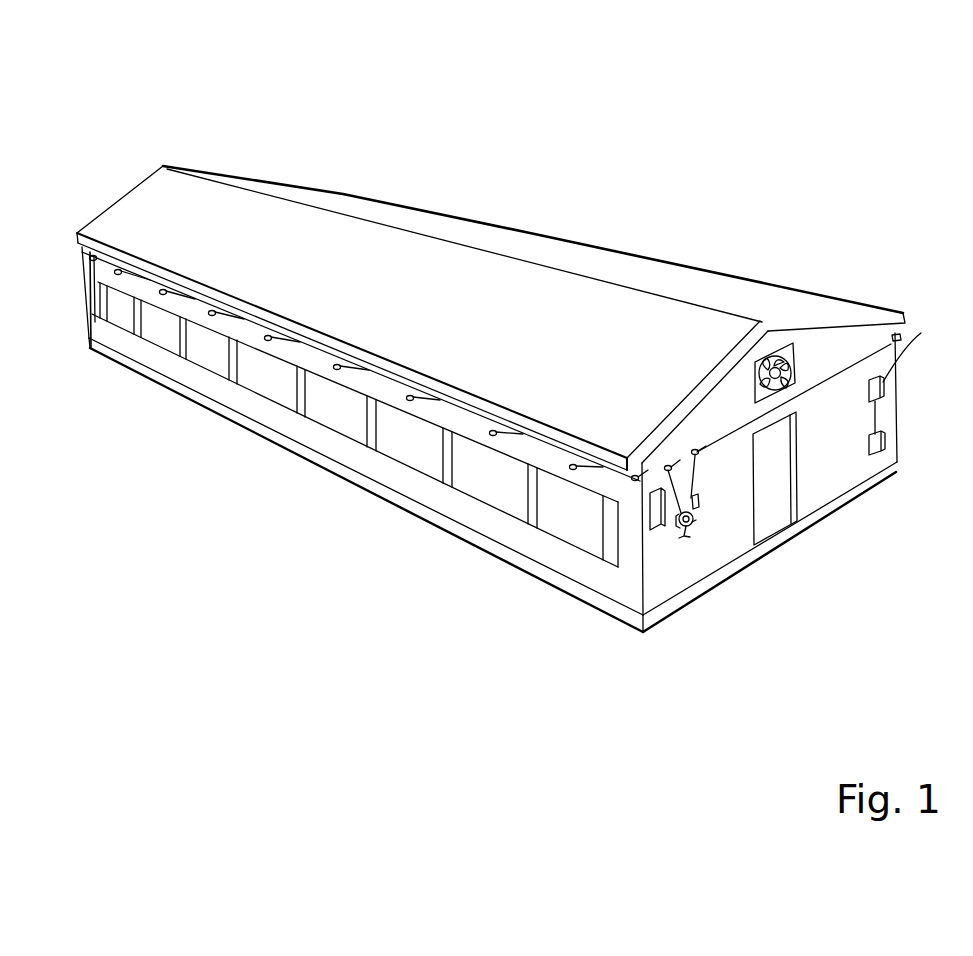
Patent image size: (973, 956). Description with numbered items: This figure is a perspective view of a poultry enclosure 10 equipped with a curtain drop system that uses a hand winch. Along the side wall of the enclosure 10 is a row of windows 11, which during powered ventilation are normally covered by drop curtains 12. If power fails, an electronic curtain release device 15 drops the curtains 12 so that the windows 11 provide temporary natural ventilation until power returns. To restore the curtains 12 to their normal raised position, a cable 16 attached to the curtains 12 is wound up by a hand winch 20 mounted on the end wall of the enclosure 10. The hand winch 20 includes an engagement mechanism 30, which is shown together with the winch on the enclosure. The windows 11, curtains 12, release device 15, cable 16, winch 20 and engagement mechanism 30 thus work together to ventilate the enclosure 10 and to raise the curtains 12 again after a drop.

The poultry enclosure 10 is at (692, 179).
The windows 11 is at (120, 333).
The drop curtains 12 is at (125, 300).
The electronic curtain release device 15 is at (697, 499).
The cable 16 is at (837, 372).
The hand winch 20 is at (702, 520).
The engagement mechanism 30 is at (686, 546).